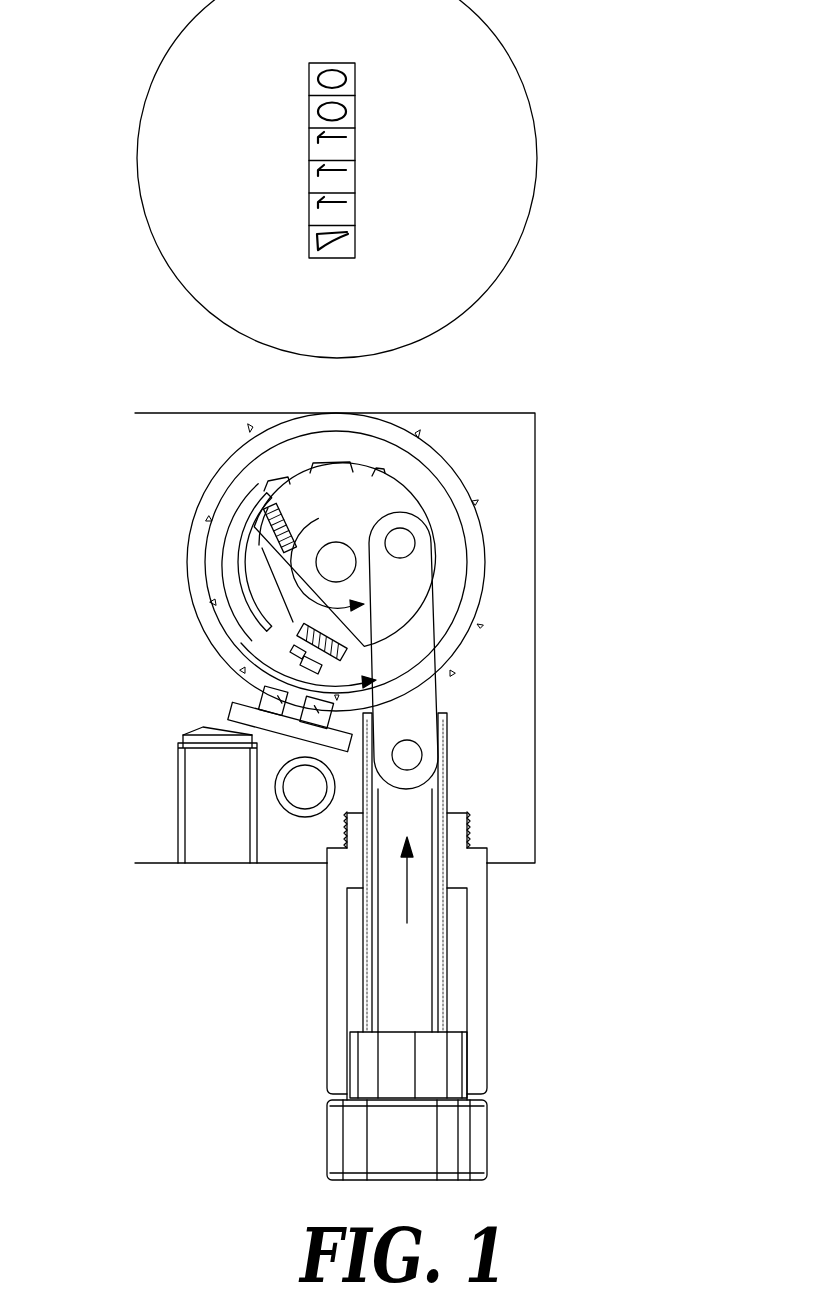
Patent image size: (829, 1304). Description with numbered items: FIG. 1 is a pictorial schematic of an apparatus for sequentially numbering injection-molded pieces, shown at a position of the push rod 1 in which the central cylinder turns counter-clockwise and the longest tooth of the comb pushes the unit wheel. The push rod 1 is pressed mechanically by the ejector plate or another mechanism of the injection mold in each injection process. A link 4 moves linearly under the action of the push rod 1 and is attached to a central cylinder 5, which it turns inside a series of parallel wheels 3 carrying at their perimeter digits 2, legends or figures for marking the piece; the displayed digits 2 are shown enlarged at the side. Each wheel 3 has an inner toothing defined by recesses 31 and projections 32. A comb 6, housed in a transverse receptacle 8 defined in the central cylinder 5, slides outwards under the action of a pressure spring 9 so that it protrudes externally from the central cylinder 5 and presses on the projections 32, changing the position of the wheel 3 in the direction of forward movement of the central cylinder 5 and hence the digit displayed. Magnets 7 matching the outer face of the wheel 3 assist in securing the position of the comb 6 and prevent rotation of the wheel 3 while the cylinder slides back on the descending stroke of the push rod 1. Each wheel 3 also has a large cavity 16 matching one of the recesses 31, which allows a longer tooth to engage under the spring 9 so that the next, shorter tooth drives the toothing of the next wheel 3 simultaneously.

The push rod 1 is at (410, 968).
The digits 2 is at (309, 240).
The wheels 3 is at (347, 430).
The link 4 is at (402, 622).
The central cylinder 5 is at (353, 513).
The comb 6 is at (282, 575).
The magnets 7 is at (300, 736).
The transverse receptacle 8 is at (305, 606).
The pressure spring 9 is at (260, 515).
The large cavity 16 is at (227, 543).
The recesses 31 is at (308, 664).
The projections 32 is at (297, 650).